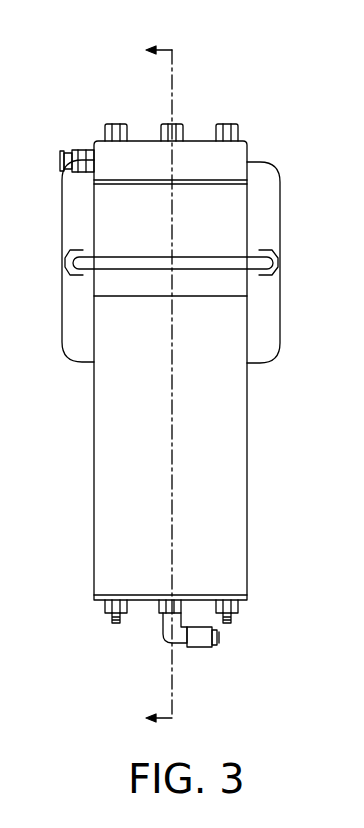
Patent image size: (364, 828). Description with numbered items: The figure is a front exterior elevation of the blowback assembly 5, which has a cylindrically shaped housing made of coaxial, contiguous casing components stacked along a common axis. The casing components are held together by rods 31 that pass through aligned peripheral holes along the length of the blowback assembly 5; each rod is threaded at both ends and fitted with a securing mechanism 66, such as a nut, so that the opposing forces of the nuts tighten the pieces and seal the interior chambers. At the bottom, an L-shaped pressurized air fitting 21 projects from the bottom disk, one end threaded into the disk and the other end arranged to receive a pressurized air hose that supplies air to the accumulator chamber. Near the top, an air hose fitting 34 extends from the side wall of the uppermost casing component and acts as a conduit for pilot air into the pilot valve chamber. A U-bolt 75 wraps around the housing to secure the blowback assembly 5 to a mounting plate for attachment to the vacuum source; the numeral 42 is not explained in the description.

The blowback assembly 5 is at (278, 123).
The pressurized air fitting 21 is at (200, 648).
The rod 31 is at (115, 123).
The air hose fitting 34 is at (80, 150).
The handle bracket 42 is at (213, 261).
The securing mechanism 66 is at (162, 125).
The U-bolt 75 is at (104, 260).